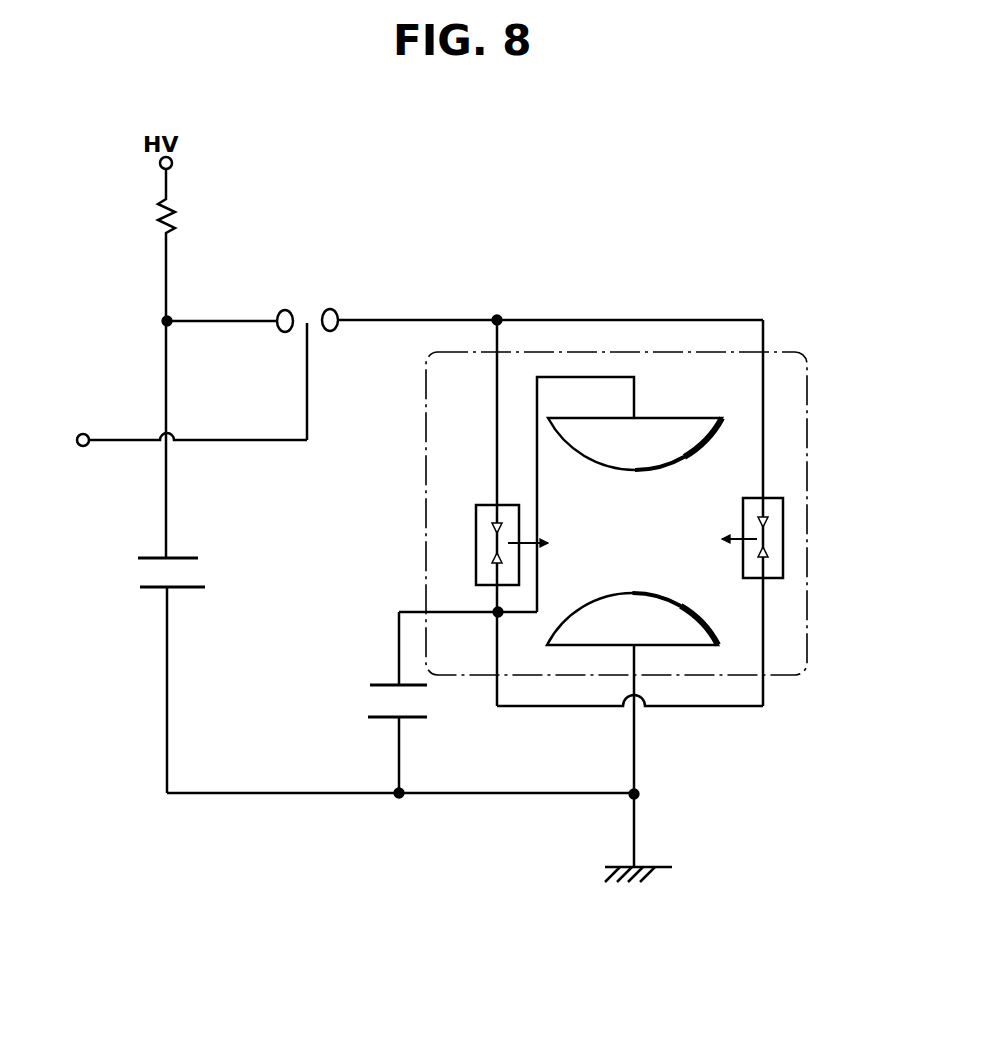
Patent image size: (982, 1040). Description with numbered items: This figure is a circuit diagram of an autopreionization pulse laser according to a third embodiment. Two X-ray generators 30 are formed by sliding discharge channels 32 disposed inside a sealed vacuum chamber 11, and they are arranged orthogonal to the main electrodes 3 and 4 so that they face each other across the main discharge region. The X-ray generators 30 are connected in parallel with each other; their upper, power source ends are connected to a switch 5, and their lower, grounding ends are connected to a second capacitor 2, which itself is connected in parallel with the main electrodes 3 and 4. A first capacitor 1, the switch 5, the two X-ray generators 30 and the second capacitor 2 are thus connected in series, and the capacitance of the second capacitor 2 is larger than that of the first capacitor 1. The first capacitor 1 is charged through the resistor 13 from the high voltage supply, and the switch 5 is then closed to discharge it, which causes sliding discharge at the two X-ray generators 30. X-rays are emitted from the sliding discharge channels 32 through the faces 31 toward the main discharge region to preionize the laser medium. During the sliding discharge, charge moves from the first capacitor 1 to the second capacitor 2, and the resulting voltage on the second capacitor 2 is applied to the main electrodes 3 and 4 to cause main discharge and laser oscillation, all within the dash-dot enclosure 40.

The first capacitor 1 is at (160, 595).
The second capacitor 2 is at (390, 725).
The main electrode 3 is at (697, 448).
The main electrode 4 is at (687, 600).
The switch 5 is at (307, 317).
The sealed vacuum chamber 11 is at (477, 573).
The charging resistor 13 is at (178, 203).
The X-ray generator 30 is at (653, 525).
The face 31 is at (520, 510).
The sliding discharge channel 32 is at (498, 538).
The X-ray tube housing 40 is at (801, 676).